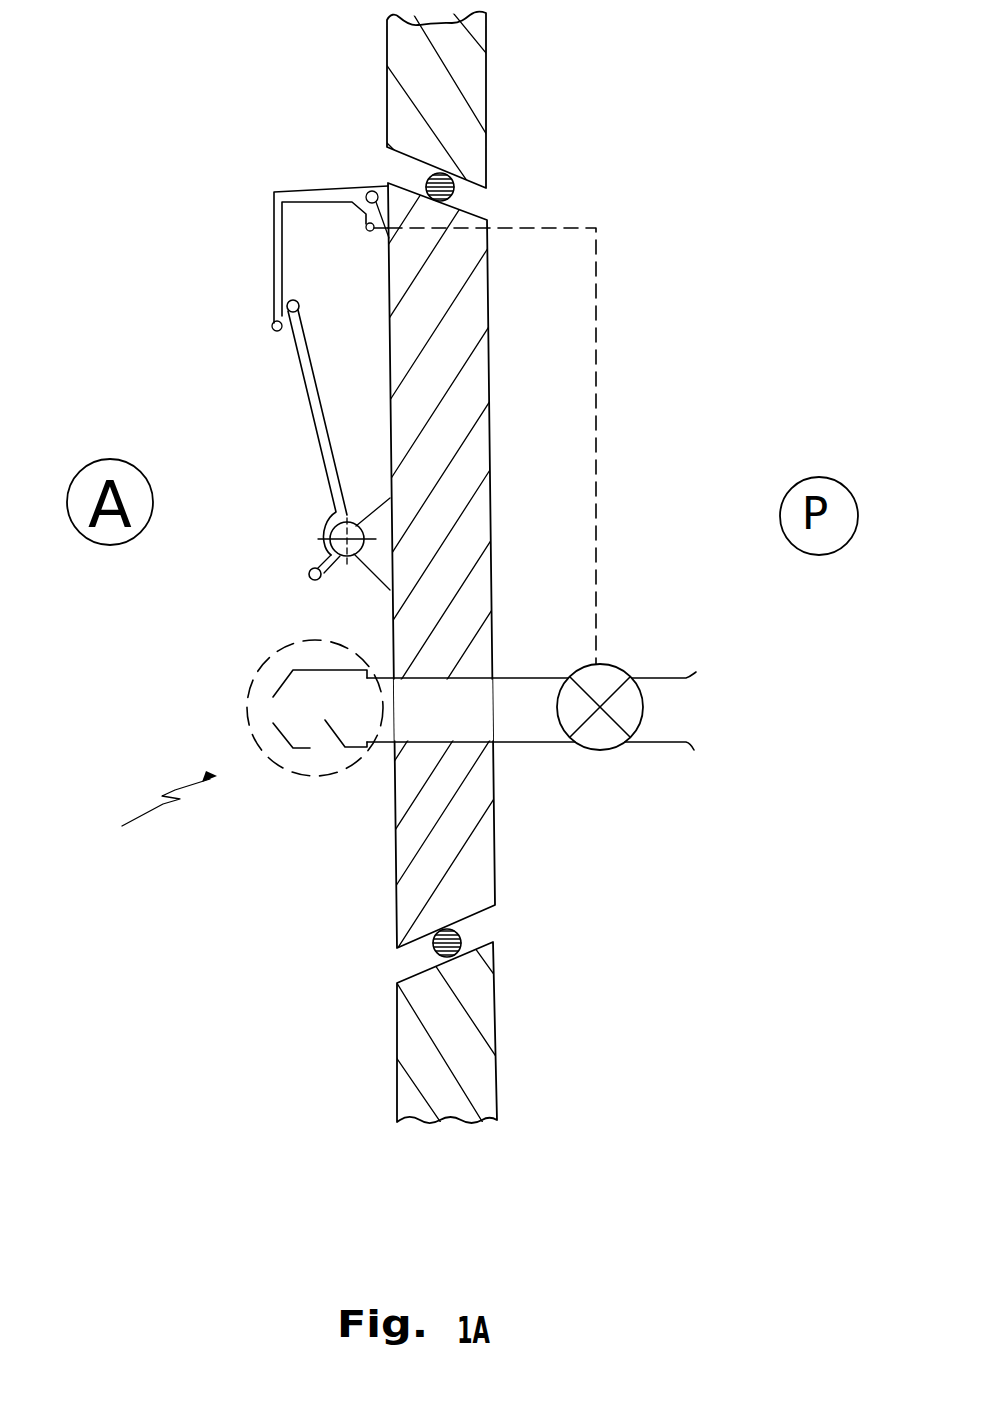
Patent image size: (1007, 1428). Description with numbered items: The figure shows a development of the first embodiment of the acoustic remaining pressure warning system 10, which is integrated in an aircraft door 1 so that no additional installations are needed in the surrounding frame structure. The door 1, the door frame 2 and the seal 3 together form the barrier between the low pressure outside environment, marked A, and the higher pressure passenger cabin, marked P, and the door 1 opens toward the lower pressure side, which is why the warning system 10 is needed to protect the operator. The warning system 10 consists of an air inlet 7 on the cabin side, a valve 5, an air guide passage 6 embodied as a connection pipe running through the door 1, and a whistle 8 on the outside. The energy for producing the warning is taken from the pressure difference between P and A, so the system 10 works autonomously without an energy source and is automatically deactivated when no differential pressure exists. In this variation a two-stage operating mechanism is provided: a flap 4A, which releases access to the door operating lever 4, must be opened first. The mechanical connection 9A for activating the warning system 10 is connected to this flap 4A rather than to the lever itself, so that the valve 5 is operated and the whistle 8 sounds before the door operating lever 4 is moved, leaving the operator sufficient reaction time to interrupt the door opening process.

The door 1 is at (462, 388).
The door frame 2 is at (460, 90).
The seal 3 is at (455, 188).
The door operating lever 4 is at (303, 370).
The flap 4A is at (272, 235).
The valve 5 is at (628, 751).
The air guide passage 6 is at (538, 756).
The air inlet 7 is at (691, 712).
The whistle 8 is at (250, 688).
The mechanical connection 9A is at (598, 578).
The warning system 10 is at (139, 812).